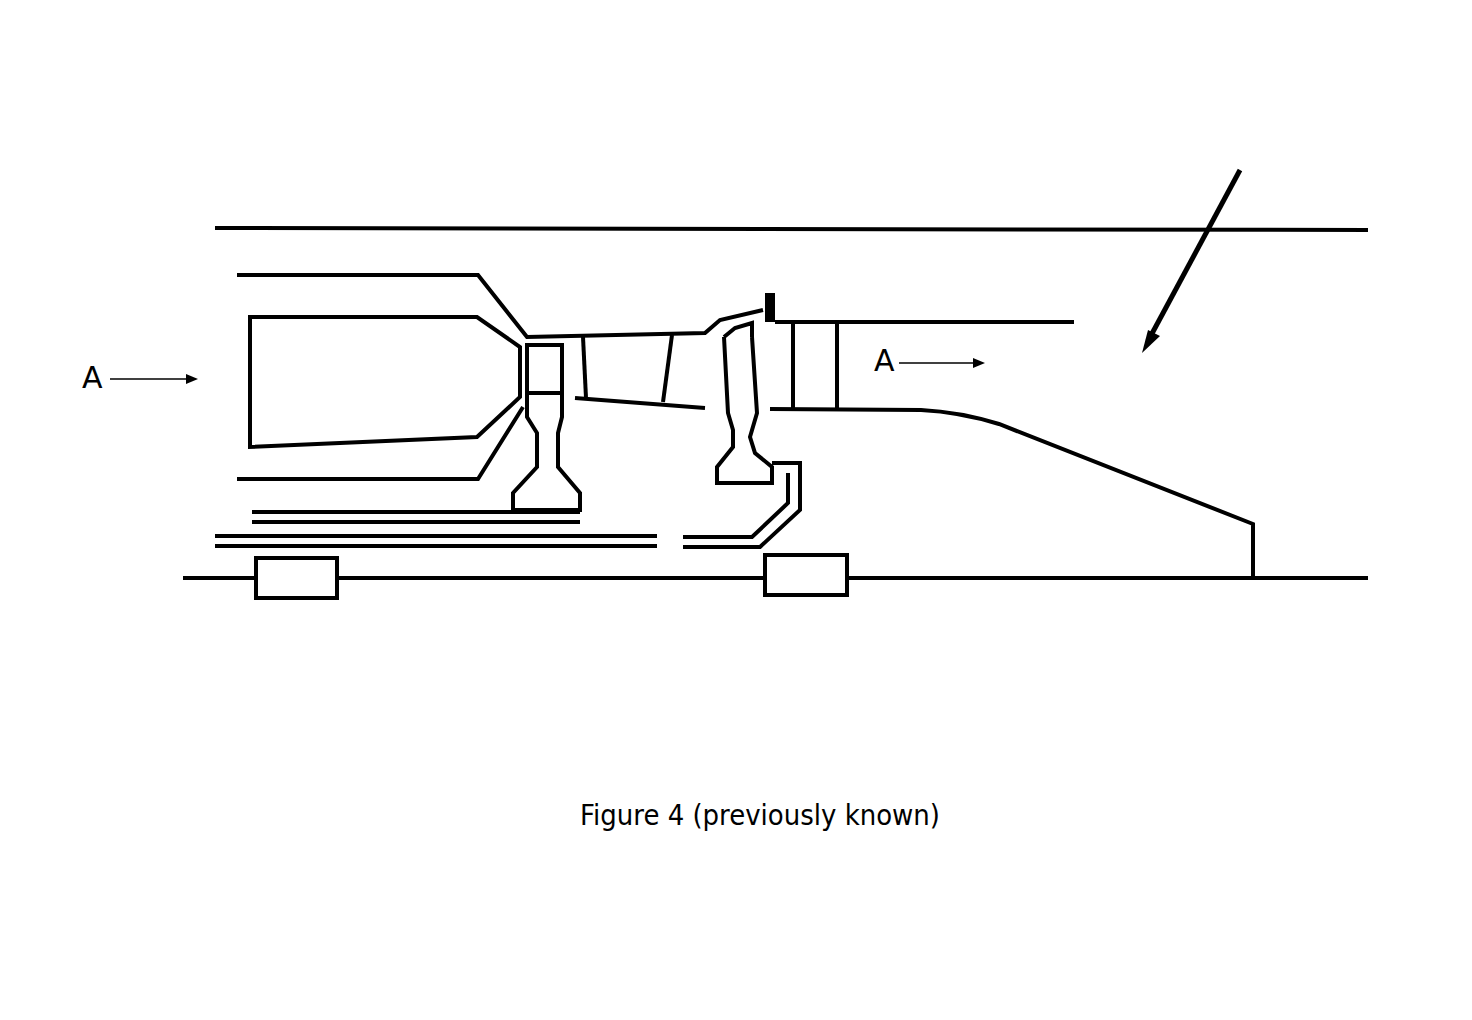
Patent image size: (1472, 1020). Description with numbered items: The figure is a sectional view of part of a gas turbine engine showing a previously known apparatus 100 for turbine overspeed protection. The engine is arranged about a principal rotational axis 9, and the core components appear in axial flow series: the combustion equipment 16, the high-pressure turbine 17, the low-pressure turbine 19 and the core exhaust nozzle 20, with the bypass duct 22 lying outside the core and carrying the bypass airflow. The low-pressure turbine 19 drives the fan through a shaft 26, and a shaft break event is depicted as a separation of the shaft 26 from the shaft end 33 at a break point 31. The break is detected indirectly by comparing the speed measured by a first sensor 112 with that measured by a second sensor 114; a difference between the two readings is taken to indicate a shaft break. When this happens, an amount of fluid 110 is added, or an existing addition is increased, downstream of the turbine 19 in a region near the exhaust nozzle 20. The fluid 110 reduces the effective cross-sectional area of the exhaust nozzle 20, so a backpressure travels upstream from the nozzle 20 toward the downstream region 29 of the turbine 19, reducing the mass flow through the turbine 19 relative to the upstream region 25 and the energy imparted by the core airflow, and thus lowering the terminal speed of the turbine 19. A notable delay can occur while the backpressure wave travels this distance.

The principal rotational axis 9 is at (967, 581).
The combustion equipment 16 is at (400, 338).
The high-pressure turbine 17 is at (545, 365).
The low-pressure turbine 19 is at (738, 343).
The core exhaust nozzle 20 is at (1058, 347).
The bypass duct 22 is at (1066, 284).
The upstream region 25 is at (713, 373).
The shaft 26 is at (410, 540).
The downstream region 29 is at (760, 360).
The break point 31 is at (668, 548).
The shaft end 33 is at (753, 485).
The apparatus for turbine overspeed protection 100 is at (963, 183).
The fluid 110 is at (1223, 208).
The first sensor 112 is at (296, 578).
The second sensor 114 is at (806, 575).